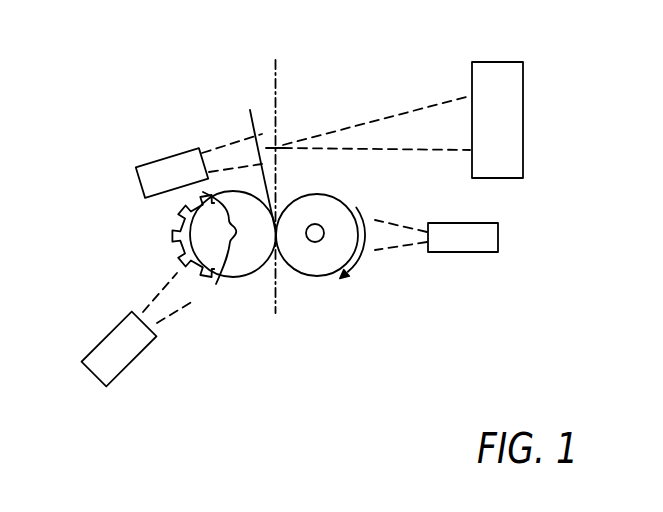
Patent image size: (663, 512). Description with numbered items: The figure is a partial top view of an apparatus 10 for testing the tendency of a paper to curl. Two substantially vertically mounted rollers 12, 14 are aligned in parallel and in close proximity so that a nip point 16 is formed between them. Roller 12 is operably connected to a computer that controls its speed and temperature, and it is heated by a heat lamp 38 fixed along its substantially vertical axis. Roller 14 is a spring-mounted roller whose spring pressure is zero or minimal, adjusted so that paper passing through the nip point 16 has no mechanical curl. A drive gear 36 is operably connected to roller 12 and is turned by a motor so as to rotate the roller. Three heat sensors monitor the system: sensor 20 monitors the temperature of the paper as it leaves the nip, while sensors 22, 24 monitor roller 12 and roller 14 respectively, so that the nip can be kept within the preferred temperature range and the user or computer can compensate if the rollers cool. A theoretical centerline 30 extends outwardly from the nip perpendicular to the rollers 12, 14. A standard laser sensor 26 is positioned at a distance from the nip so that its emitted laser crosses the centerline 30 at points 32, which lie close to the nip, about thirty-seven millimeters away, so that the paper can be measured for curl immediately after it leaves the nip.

The apparatus 10 is at (110, 43).
The roller 12 is at (276, 233).
The roller 14 is at (320, 207).
The nip point 16 is at (275, 236).
The heat sensor 20 is at (157, 180).
The heat sensor 22 is at (95, 368).
The heat sensor 24 is at (490, 242).
The laser sensor 26 is at (510, 148).
The theoretical centerline 30 is at (277, 72).
The points 32 is at (278, 148).
The drive gear 36 is at (186, 255).
The heat lamp 38 is at (216, 284).